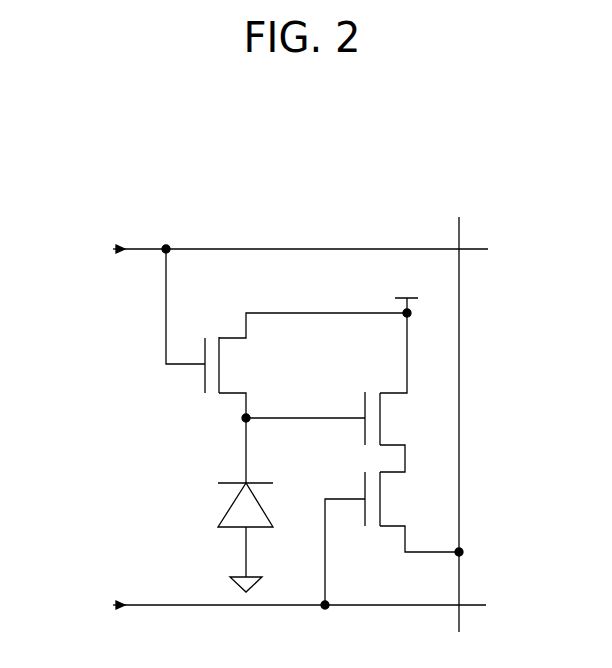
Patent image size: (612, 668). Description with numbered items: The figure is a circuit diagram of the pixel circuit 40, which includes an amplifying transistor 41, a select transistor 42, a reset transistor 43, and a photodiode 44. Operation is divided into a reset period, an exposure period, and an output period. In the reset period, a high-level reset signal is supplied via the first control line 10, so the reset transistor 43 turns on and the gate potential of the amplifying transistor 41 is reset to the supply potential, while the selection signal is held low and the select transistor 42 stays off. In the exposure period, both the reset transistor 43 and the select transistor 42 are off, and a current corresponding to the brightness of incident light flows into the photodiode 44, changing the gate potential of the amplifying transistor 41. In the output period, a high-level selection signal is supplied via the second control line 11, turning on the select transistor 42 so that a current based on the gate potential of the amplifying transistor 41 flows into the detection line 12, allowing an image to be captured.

The pixel circuit 40 is at (505, 180).
The first control line 10 is at (263, 249).
The second control line 11 is at (255, 605).
The detection line 12 is at (462, 450).
The amplifying transistor 41 is at (390, 420).
The select transistor 42 is at (390, 500).
The reset transistor 43 is at (229, 366).
The photodiode 44 is at (230, 517).